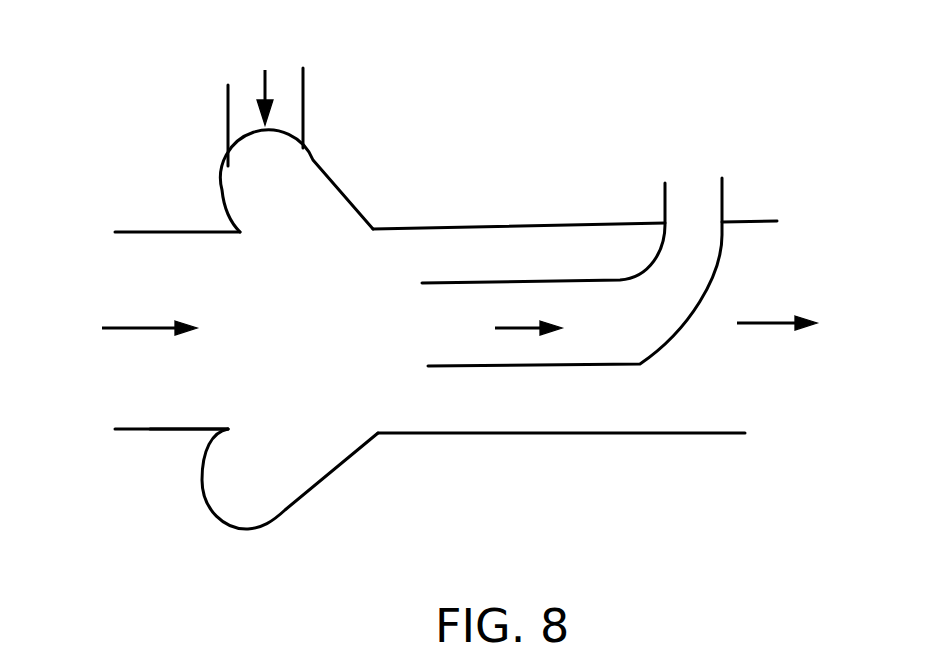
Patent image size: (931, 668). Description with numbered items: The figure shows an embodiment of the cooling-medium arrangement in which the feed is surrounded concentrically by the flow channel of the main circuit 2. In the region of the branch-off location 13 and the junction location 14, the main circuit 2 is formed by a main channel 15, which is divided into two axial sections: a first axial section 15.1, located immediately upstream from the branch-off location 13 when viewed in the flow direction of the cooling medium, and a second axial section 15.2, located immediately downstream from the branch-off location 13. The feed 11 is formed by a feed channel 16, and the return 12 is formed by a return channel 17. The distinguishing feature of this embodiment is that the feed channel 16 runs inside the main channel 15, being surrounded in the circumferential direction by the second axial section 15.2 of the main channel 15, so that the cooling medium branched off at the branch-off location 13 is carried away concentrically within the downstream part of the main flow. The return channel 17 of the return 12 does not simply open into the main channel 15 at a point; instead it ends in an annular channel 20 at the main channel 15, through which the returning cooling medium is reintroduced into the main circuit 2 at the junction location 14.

The main circuit 2 is at (395, 305).
The feed 11 is at (523, 328).
The return 12 is at (266, 84).
The branch-off location 13 is at (430, 337).
The junction location 14 is at (300, 435).
The main channel 15 is at (148, 387).
The first axial section 15.1 is at (152, 430).
The second axial section 15.2 is at (675, 433).
The feed channel 16 is at (577, 366).
The return channel 17 is at (303, 113).
The annular channel 20 is at (318, 195).